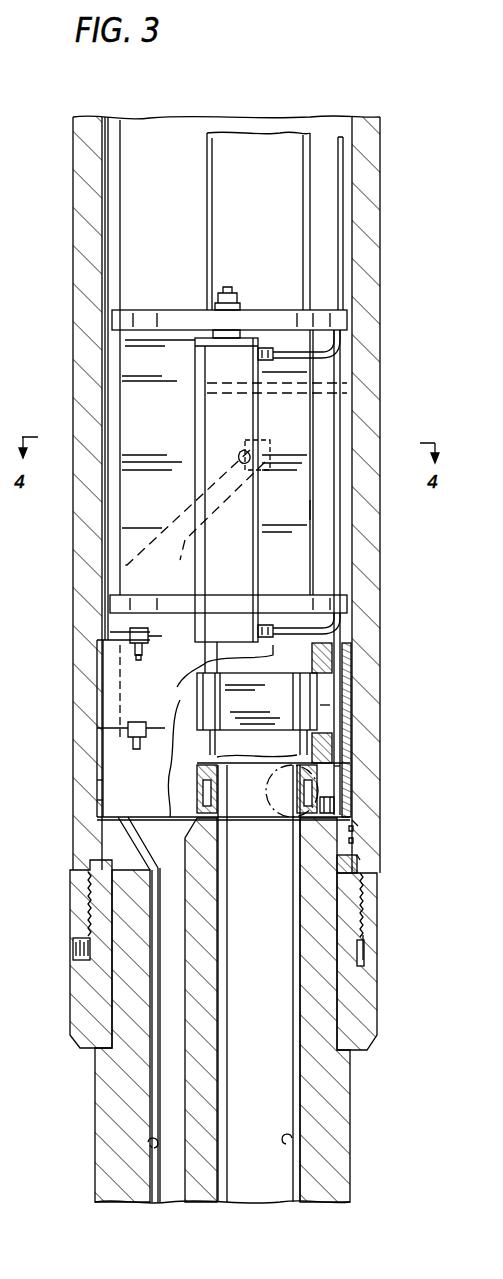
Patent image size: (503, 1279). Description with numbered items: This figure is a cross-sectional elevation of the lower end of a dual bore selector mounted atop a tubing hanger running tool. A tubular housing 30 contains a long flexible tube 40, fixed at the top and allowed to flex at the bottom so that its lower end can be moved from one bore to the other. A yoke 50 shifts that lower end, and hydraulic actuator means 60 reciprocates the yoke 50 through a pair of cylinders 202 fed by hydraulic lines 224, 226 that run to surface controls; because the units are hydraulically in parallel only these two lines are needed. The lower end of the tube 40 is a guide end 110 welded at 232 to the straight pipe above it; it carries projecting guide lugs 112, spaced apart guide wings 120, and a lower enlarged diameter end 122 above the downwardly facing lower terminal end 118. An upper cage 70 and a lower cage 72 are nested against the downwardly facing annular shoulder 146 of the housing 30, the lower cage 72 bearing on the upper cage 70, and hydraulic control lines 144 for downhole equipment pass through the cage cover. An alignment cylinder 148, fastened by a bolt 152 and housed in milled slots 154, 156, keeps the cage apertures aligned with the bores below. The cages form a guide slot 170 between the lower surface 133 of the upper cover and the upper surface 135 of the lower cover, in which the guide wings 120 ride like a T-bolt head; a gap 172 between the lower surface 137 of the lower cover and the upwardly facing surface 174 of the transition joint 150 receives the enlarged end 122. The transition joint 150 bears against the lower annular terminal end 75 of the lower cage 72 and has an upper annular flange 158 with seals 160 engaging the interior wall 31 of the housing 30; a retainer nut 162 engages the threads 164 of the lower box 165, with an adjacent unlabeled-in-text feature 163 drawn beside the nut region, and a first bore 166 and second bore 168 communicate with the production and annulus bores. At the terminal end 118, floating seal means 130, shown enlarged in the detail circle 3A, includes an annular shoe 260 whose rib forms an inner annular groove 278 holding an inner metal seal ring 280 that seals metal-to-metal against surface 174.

The housing 30 is at (363, 558).
The interior wall of housing 31 is at (335, 803).
The tube 40 is at (312, 213).
The yoke 50 is at (120, 373).
The hydraulic actuator means 60 is at (259, 568).
The upper cage 70 is at (97, 710).
The lower cage 72 is at (97, 742).
The lower annular terminal end of lower cage 75 is at (362, 823).
The guide end 110 is at (312, 520).
The guide lugs 112 is at (273, 448).
The lower terminal end 118 is at (212, 823).
The guide wings 120 is at (317, 700).
The lower enlarged diameter end 122 is at (305, 786).
The floating seal means 130 is at (297, 838).
The lower surface of cover of upper cage 133 is at (350, 675).
The upper surface of cover of lower cage 135 is at (327, 716).
The lower surface of cover of lower cage 137 is at (340, 770).
The hydraulic control lines 144 is at (345, 750).
The downwardly facing annular shoulder 146 is at (355, 645).
The alignment cylinder 148 is at (128, 633).
The transition joint 150 is at (318, 955).
The bolt 152 is at (132, 653).
The milled slot 154 is at (147, 627).
The milled slot 156 is at (100, 778).
The upper annular flange 158 is at (357, 862).
The seals 160 is at (354, 834).
The retainer nut 162 is at (360, 1020).
The shoulder 163 is at (380, 880).
The threads 164 is at (365, 918).
The lower box 165 is at (372, 958).
The first bore 166 is at (295, 1142).
The second bore 168 is at (152, 1146).
The guide slot 170 is at (133, 683).
The gap 172 is at (100, 800).
The upwardly facing surface 174 is at (97, 860).
The cylinders 202 is at (195, 500).
The hydraulic line 224 is at (343, 252).
The hydraulic line 226 is at (350, 600).
The weld 232 is at (313, 390).
The annular shoe 260 is at (484, 1050).
The inner annular groove 278 is at (484, 1140).
The inner annular metal seal ring 280 is at (484, 1186).
The detail circle 3A is at (268, 815).